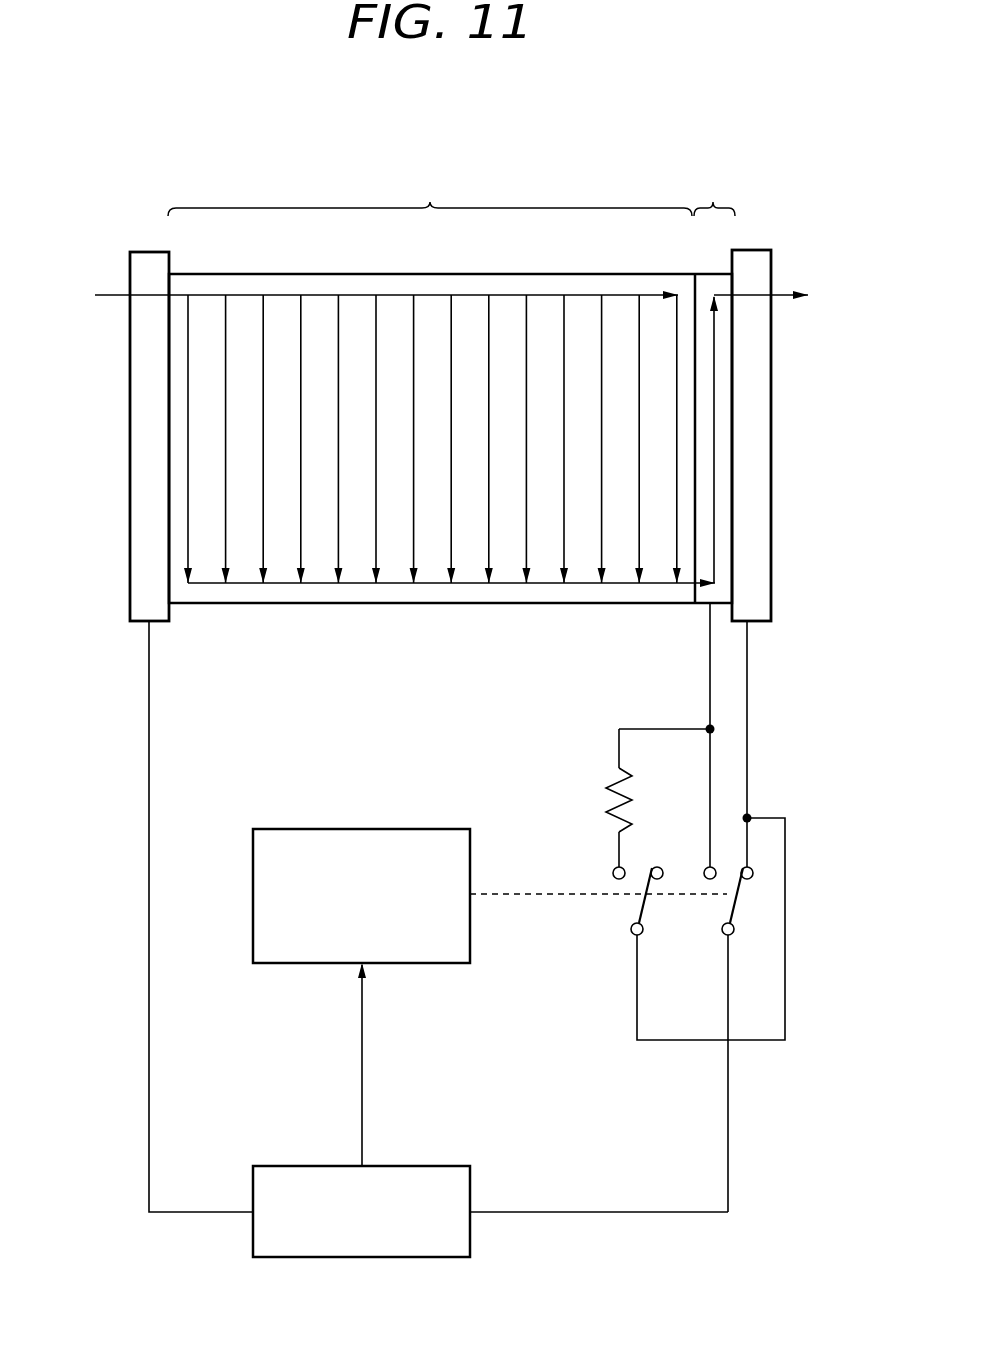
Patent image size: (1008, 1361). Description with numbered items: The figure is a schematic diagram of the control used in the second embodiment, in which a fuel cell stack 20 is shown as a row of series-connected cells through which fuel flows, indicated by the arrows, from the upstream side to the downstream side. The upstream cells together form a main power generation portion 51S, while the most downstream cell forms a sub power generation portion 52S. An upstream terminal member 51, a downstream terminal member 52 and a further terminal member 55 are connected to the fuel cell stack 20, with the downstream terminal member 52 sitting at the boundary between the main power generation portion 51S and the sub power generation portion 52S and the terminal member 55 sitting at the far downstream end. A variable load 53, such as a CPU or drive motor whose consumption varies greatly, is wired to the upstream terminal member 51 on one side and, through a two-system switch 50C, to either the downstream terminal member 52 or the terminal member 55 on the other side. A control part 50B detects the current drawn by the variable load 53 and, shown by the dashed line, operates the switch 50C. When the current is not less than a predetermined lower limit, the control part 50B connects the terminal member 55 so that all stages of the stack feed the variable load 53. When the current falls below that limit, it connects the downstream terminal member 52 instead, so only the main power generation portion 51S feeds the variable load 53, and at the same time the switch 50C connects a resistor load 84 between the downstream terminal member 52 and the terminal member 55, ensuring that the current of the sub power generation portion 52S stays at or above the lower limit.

The fuel cell stack 20 is at (552, 162).
The main power generation portion 51S is at (430, 194).
The sub power generation portion 52S is at (714, 194).
The upstream terminal member 51 is at (150, 733).
The downstream terminal member 52 is at (708, 672).
The terminal member 55 is at (748, 658).
The resistor load 84 is at (607, 795).
The control part 50B is at (440, 963).
The two-system switch 50C is at (672, 917).
The variable load 53 is at (440, 1258).